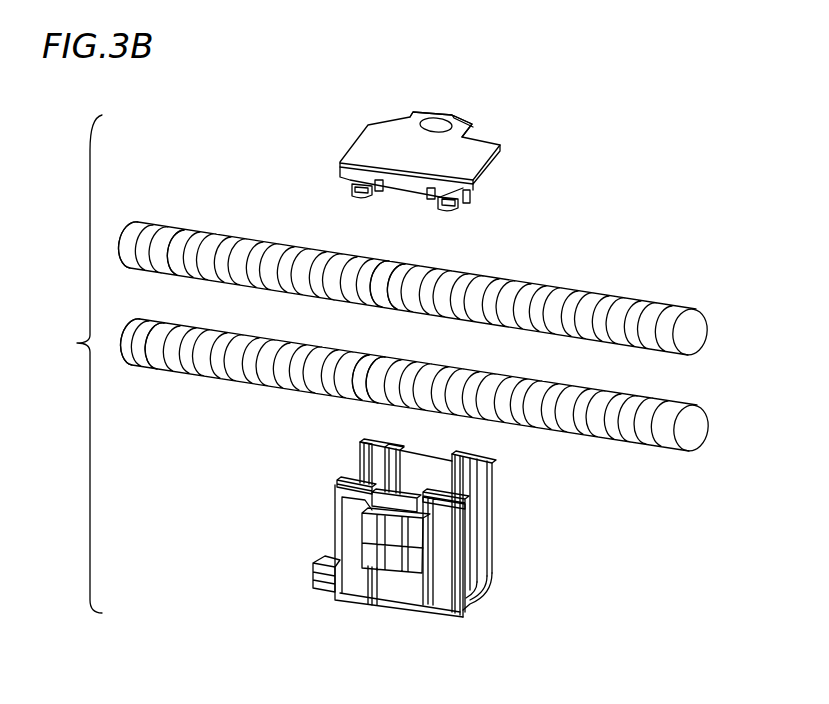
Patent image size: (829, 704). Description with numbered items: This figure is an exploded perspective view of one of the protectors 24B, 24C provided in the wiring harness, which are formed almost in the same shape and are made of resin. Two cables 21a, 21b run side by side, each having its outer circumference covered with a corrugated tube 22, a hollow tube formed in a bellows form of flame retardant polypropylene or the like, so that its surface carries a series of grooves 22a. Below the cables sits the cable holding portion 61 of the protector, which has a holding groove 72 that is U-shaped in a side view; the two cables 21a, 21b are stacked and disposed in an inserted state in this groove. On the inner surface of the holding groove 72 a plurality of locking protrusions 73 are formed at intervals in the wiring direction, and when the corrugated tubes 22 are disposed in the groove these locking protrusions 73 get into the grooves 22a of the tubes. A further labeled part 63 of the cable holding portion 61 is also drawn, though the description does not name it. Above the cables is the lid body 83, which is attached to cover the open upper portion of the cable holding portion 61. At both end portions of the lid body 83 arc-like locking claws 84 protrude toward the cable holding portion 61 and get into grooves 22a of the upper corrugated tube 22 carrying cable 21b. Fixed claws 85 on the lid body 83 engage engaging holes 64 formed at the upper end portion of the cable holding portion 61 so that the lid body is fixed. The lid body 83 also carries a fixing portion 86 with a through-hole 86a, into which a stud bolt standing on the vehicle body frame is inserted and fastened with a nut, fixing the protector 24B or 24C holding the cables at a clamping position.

The cable 21a is at (642, 433).
The cable 21b is at (642, 303).
The corrugated tube 22 is at (188, 250).
The groove 22a is at (408, 282).
The protector 24B is at (394, 364).
The protector 24C is at (394, 364).
The cable holding portion 61 is at (412, 560).
The left holding portion 63 is at (335, 485).
The engaging hole 64 is at (492, 580).
The holding groove 72 is at (423, 468).
The locking protrusion 73 is at (490, 525).
The lid body 83 is at (428, 151).
The locking claw 84 is at (485, 178).
The fixed claw 85 is at (356, 196).
The fixing portion 86 is at (413, 89).
The through-hole 86a is at (428, 123).